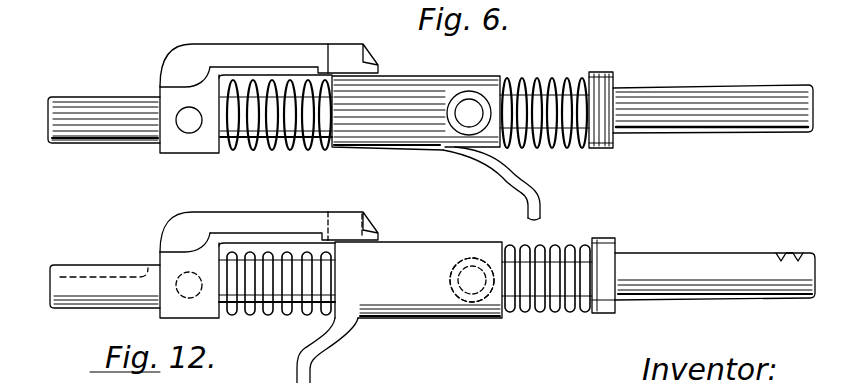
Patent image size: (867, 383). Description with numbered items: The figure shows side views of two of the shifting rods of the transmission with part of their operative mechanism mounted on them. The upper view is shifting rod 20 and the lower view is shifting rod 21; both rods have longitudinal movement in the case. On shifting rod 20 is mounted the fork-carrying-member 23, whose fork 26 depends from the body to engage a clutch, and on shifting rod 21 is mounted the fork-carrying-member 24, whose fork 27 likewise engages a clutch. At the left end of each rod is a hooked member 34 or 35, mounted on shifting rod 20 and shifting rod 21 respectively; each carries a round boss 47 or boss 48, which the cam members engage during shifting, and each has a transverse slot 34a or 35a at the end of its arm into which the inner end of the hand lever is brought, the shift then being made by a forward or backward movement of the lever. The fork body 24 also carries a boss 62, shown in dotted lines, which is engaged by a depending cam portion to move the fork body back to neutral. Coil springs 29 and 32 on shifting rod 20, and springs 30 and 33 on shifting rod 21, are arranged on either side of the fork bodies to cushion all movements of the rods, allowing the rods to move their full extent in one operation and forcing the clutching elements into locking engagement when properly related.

In FIG. 6, the shifting rod 20 is at (648, 93).
In FIG. 12, the shifting rod 21 is at (640, 262).
In FIG. 6, the fork-carrying-member 23 is at (403, 82).
In FIG. 12, the fork-carrying-member 24 is at (413, 250).
In FIG. 6, the fork 26 is at (541, 195).
In FIG. 12, the fork 27 is at (300, 373).
In FIG. 6, the spring 29 is at (540, 78).
In FIG. 12, the spring 30 is at (553, 253).
In FIG. 6, the spring 32 is at (266, 151).
In FIG. 12, the spring 33 is at (325, 276).
In FIG. 6, the member 34 is at (265, 48).
In FIG. 6, the transverse slot 34a is at (340, 53).
In FIG. 12, the member 35 is at (191, 222).
In FIG. 12, the transverse slot 35a is at (347, 217).
In FIG. 6, the boss 47 is at (183, 127).
In FIG. 12, the boss 48 is at (173, 277).
In FIG. 12, the boss 62 is at (470, 262).